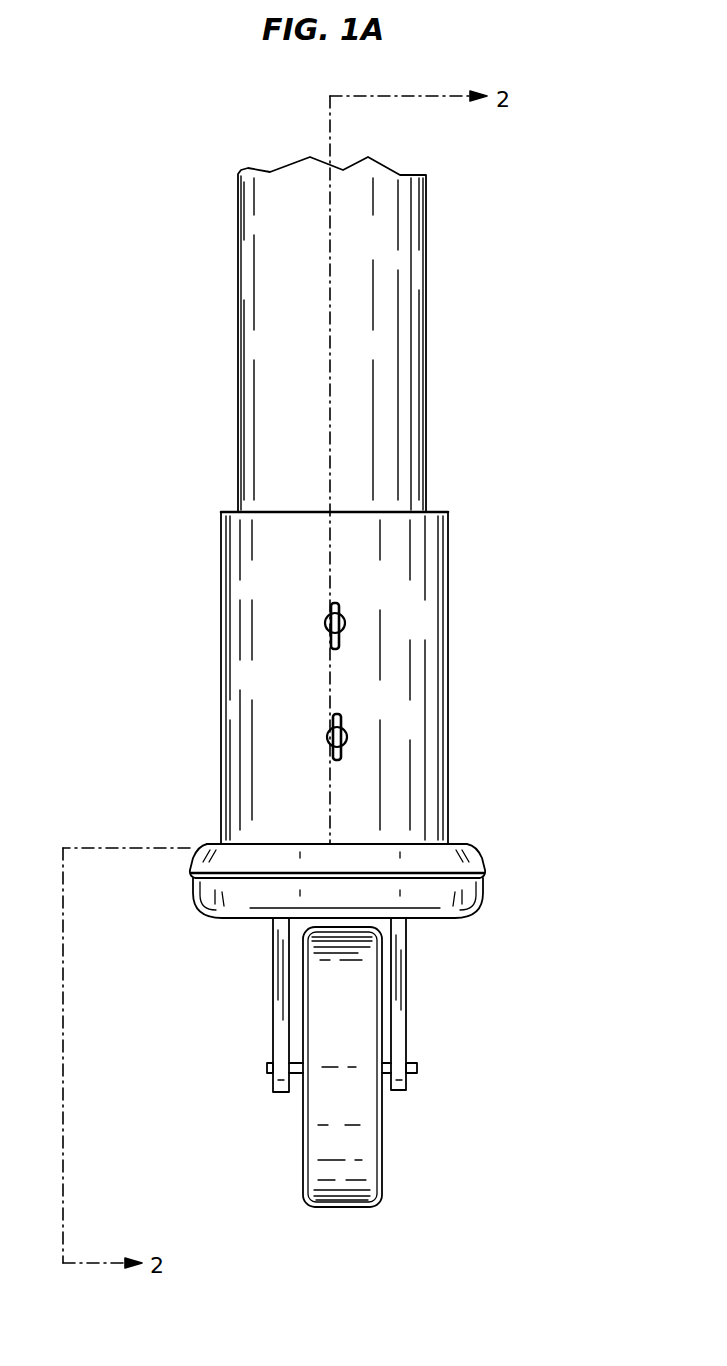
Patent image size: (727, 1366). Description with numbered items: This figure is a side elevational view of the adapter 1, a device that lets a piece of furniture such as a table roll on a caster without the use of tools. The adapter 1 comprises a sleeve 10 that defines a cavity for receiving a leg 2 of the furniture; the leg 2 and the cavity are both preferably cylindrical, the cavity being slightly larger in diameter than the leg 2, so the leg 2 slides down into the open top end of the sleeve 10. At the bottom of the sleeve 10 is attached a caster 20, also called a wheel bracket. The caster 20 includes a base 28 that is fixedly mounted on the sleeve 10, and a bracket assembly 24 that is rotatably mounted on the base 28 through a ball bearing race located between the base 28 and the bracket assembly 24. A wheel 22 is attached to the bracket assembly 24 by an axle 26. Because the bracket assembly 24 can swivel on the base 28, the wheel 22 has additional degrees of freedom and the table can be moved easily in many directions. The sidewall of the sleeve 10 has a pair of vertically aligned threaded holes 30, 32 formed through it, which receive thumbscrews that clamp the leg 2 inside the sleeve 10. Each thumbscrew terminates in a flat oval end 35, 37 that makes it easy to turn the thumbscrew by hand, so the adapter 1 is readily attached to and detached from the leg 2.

The adapter 1 is at (466, 551).
The leg 2 is at (426, 265).
The sleeve 10 is at (221, 549).
The caster 20 is at (490, 899).
The wheel 22 is at (303, 1170).
The bracket assembly 24 is at (407, 977).
The axle 26 is at (267, 1068).
The base 28 is at (190, 880).
The threaded hole 30 is at (325, 625).
The threaded hole 32 is at (327, 738).
The flat oval end 35 is at (338, 605).
The flat oval end 37 is at (341, 716).